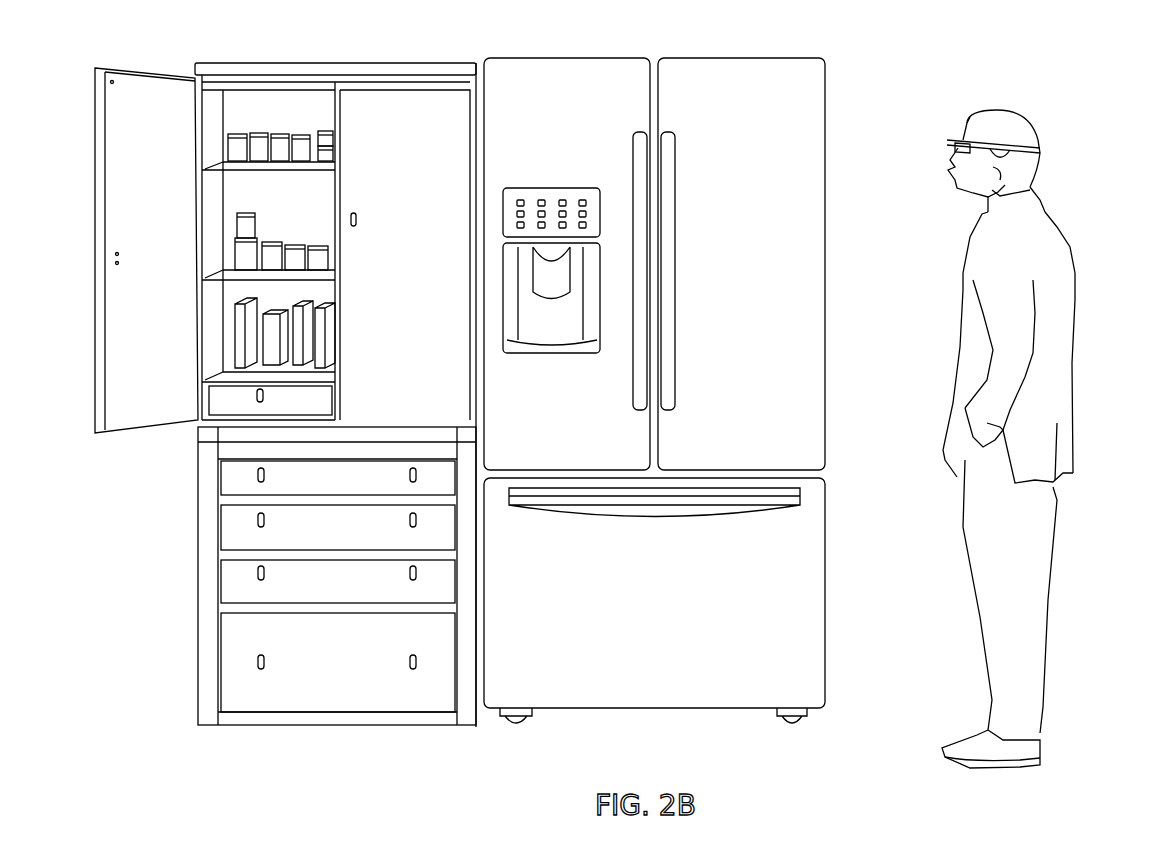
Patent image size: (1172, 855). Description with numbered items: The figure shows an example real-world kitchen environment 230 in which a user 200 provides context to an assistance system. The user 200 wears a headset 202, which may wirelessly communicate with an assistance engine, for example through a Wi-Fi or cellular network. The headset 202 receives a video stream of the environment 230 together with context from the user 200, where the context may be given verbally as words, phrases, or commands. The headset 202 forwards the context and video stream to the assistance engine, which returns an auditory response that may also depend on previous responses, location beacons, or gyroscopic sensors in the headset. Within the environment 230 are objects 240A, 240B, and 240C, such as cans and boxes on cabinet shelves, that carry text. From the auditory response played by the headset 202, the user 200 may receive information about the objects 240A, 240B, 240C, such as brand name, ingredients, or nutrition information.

The environment 230 is at (613, 381).
The user 200 is at (1040, 157).
The headset 202 is at (1062, 234).
The object 240A is at (259, 116).
The object 240B is at (232, 232).
The object 240C is at (228, 337).